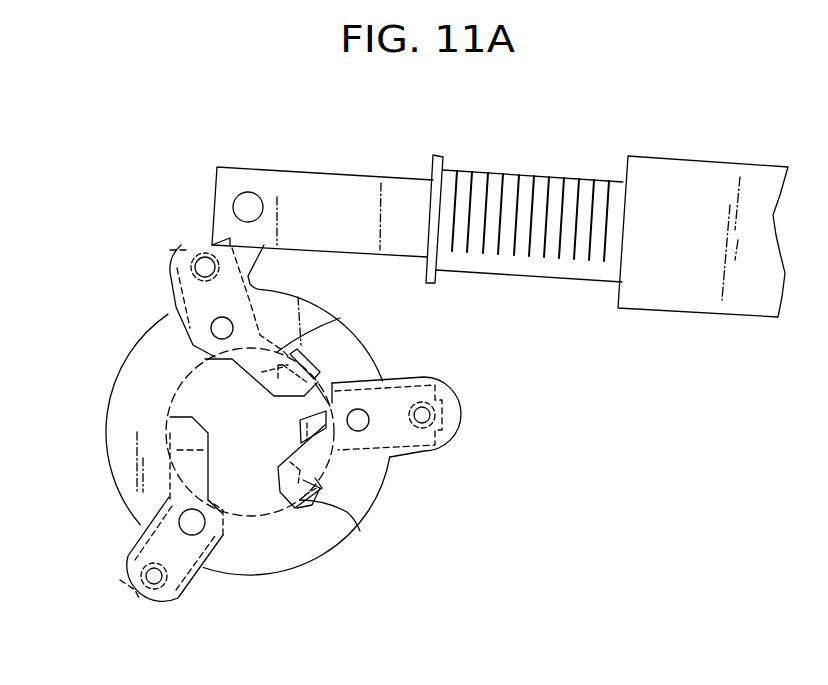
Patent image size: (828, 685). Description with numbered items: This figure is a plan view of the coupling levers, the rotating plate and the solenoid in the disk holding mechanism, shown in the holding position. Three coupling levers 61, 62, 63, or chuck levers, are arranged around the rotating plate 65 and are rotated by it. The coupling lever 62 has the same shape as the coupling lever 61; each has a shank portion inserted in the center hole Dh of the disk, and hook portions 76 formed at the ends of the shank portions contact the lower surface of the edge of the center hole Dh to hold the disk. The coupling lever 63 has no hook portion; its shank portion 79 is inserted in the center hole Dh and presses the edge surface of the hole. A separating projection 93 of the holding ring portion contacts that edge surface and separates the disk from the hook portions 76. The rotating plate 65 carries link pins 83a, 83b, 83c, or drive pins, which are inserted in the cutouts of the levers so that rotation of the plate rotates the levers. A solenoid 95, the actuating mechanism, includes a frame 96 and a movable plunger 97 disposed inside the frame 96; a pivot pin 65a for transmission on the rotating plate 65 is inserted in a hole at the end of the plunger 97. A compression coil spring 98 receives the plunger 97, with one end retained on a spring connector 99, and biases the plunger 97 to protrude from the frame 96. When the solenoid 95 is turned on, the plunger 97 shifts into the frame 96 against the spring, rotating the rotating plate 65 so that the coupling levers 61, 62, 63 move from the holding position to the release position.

The rotating plate 65 is at (125, 465).
The center hole Dh is at (170, 396).
The shank portion 79 is at (170, 417).
The hook portions 76 is at (303, 348).
The separating projection 93 is at (318, 378).
The coupling lever 62 is at (187, 332).
The link pin 83b is at (205, 257).
The coupling lever 61 is at (350, 466).
The link pin 83a is at (430, 413).
The coupling lever 63 is at (228, 540).
The link pin 83c is at (152, 582).
The plunger 97 is at (348, 195).
The pivot pin for transmission 65a is at (249, 192).
The spring connector 99 is at (438, 154).
The compression coil spring 98 is at (544, 182).
The frame 96 is at (708, 185).
The solenoid 95 is at (656, 318).